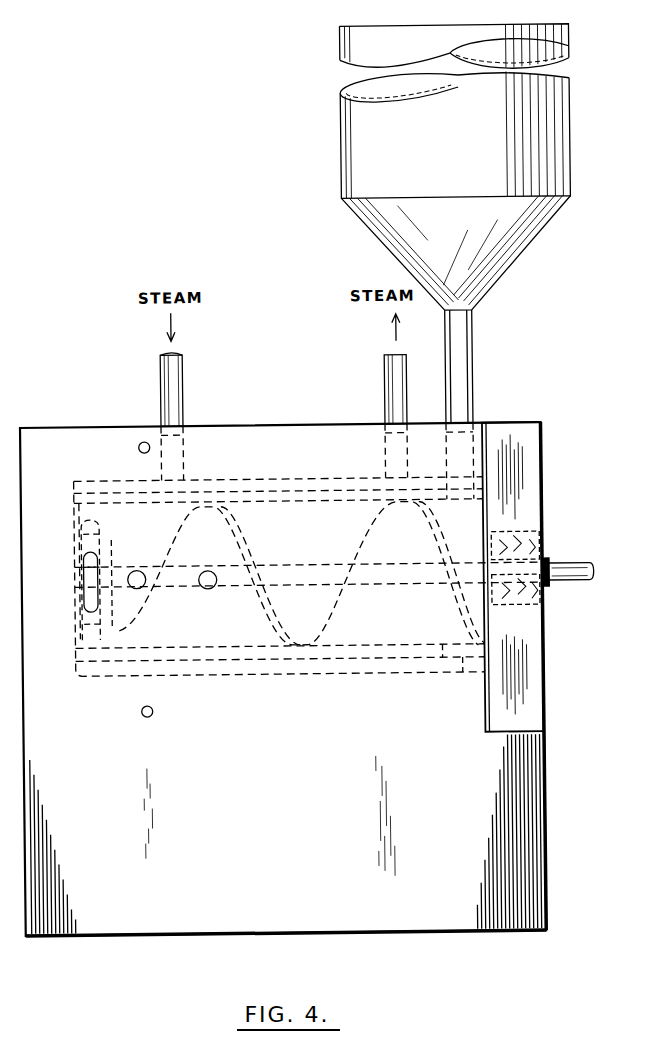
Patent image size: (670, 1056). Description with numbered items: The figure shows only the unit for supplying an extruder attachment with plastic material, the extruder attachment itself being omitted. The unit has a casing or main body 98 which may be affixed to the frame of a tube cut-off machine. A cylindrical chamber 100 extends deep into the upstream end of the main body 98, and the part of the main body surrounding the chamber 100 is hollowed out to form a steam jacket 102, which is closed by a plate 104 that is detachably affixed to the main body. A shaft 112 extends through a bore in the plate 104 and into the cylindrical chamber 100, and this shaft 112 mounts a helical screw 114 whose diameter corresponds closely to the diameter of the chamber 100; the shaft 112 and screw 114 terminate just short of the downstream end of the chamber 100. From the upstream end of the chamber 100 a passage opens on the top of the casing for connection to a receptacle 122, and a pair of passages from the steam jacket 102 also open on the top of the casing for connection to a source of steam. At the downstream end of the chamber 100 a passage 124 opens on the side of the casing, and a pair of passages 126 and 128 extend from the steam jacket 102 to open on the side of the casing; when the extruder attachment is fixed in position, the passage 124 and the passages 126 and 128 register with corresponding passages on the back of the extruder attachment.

The main body 98 is at (266, 833).
The cylindrical chamber 100 is at (257, 656).
The steam jacket 102 is at (277, 665).
The plate 104 is at (531, 459).
The shaft 112 is at (567, 576).
The helical screw 114 is at (322, 622).
The receptacle 122 is at (470, 153).
The passage 124 is at (106, 600).
The passage 126 is at (136, 572).
The passage 128 is at (207, 573).